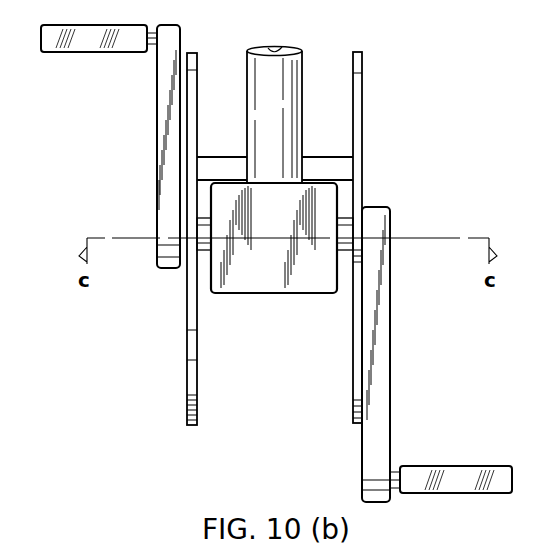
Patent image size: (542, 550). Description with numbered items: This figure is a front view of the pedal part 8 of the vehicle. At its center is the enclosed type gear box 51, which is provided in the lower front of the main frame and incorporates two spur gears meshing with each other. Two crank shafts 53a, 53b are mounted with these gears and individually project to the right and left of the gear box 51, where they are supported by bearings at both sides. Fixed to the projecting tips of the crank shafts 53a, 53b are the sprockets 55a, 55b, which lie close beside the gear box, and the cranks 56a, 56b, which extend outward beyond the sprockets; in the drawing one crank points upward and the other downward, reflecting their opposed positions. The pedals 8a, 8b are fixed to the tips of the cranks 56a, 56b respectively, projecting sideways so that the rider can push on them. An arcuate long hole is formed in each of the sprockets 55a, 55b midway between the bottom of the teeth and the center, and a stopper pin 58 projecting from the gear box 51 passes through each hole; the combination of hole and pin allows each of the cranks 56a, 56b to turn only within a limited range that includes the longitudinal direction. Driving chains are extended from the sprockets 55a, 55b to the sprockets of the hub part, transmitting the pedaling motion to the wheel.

The pedal part 8 is at (408, 275).
The pedal 8a is at (440, 468).
The pedal 8b is at (67, 40).
The enclosed type gear box 51 is at (261, 276).
The crank shaft 53a is at (347, 229).
The crank shaft 53b is at (203, 253).
The sprocket 55a is at (362, 58).
The sprocket 55b is at (187, 389).
The crank 56a is at (380, 378).
The crank 56b is at (168, 134).
The stopper pin 58 is at (328, 160).